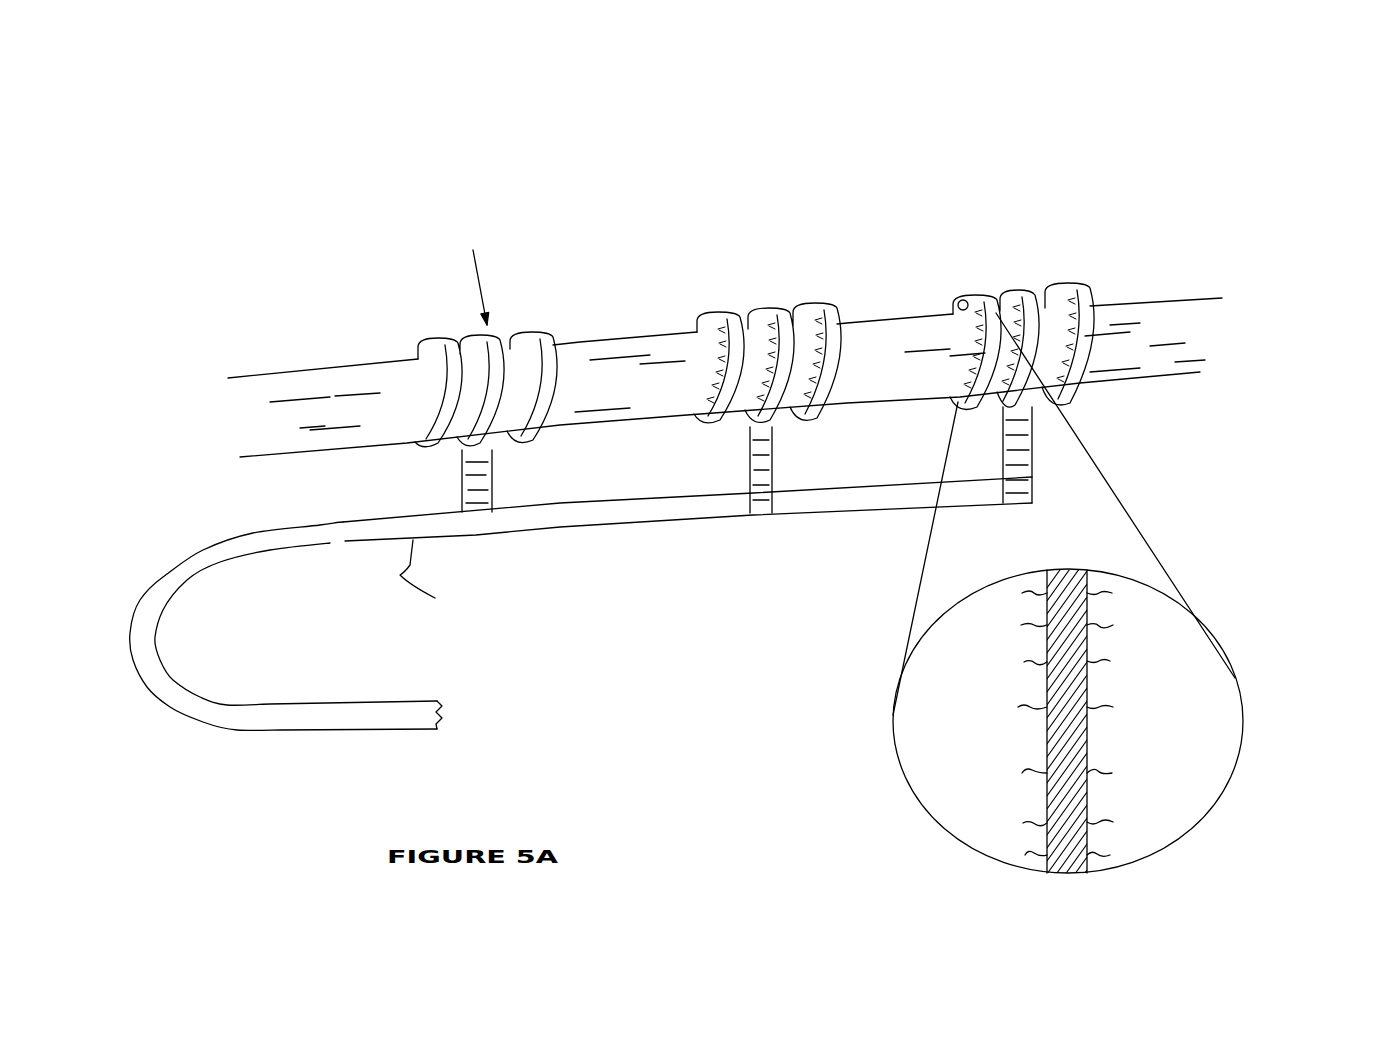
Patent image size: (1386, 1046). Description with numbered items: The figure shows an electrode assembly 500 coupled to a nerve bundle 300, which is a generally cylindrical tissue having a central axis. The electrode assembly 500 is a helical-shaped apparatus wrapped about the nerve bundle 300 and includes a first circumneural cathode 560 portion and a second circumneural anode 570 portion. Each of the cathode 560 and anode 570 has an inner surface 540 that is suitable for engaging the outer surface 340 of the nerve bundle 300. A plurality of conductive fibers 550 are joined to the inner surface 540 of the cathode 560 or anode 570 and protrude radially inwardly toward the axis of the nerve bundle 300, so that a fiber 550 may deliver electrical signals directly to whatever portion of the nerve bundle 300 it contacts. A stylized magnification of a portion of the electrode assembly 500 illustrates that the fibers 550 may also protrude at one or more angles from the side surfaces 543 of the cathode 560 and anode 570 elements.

The electrode assembly 500 is at (568, 175).
The nerve bundle 300 is at (262, 345).
The outer surface 340 is at (321, 364).
The inner surface 540 is at (955, 300).
The circumneural cathode 560 is at (1103, 285).
The circumneural anode 570 is at (855, 300).
The side surfaces 543 is at (1273, 673).
The fibers 550 is at (1100, 707).